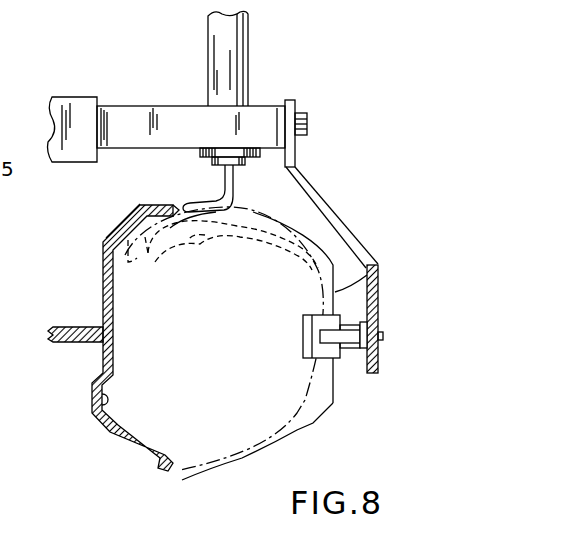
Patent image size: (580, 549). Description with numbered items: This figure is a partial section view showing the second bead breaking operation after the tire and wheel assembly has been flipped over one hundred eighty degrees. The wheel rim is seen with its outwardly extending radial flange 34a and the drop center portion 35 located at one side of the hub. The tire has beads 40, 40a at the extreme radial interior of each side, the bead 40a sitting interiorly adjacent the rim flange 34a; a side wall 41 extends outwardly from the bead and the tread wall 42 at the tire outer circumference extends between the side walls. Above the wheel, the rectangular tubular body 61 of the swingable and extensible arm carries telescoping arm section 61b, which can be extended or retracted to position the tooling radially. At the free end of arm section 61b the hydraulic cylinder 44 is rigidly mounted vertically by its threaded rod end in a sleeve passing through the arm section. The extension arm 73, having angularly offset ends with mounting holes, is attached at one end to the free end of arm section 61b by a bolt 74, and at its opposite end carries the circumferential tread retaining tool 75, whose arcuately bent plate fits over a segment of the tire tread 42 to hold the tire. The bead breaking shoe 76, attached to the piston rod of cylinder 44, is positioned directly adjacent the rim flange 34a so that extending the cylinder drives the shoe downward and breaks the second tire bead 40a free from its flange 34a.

The radial flange 34a is at (145, 205).
The drop center portion 35 is at (93, 407).
The bead 40 is at (150, 467).
The bead 40a is at (128, 256).
The side wall 41 is at (242, 458).
The tread wall 42 is at (368, 276).
The cylinder 44 is at (251, 57).
The rectangular tubular body 61 is at (76, 95).
The arm section 61b is at (146, 106).
The extension arm 73 is at (333, 212).
The bolt 74 is at (307, 125).
The tread retaining tool 75 is at (345, 358).
The bead breaking shoe 76 is at (207, 194).